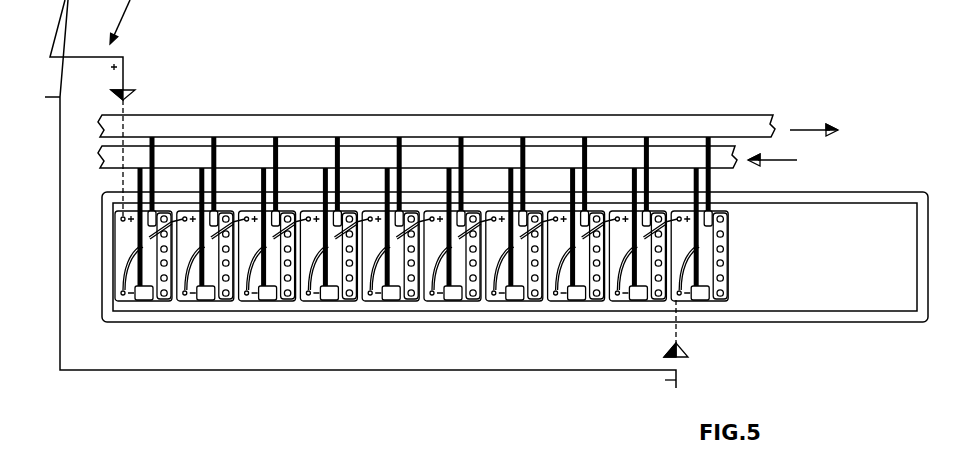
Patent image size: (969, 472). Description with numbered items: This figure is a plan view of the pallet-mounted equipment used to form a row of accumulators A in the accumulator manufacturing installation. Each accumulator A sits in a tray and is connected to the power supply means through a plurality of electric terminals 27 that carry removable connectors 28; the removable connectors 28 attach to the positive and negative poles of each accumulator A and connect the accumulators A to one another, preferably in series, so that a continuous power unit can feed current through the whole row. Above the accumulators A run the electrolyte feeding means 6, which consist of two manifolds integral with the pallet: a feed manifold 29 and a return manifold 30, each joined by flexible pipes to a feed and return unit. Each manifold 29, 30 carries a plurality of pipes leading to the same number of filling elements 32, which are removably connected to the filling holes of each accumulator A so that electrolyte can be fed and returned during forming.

The electrolyte feeding means 6 is at (471, 104).
The electric terminals 27 is at (268, 237).
The removable connectors 28 is at (436, 214).
The electrolyte feed manifold 29 is at (721, 159).
The electrolyte return manifold 30 is at (723, 127).
The filling elements 32 is at (586, 282).
The accumulator A is at (682, 262).